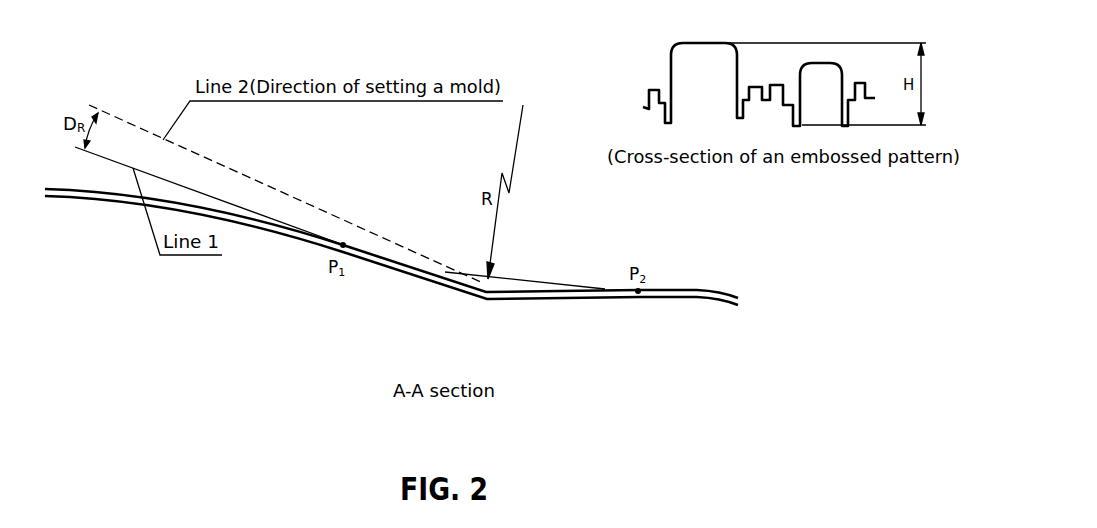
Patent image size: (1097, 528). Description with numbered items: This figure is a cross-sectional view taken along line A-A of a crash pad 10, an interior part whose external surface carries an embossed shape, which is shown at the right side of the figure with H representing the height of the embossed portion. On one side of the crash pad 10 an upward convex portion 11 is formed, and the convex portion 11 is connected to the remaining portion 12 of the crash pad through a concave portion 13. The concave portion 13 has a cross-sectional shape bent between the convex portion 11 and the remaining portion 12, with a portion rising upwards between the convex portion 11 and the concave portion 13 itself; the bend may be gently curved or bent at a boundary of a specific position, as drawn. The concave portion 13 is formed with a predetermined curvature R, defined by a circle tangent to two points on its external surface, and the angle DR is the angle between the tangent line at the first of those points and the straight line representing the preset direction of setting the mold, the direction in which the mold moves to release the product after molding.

The crash pad 10 is at (582, 302).
The convex portion 11 is at (72, 202).
The remaining portion 12 is at (708, 298).
The concave portion 13 is at (514, 292).